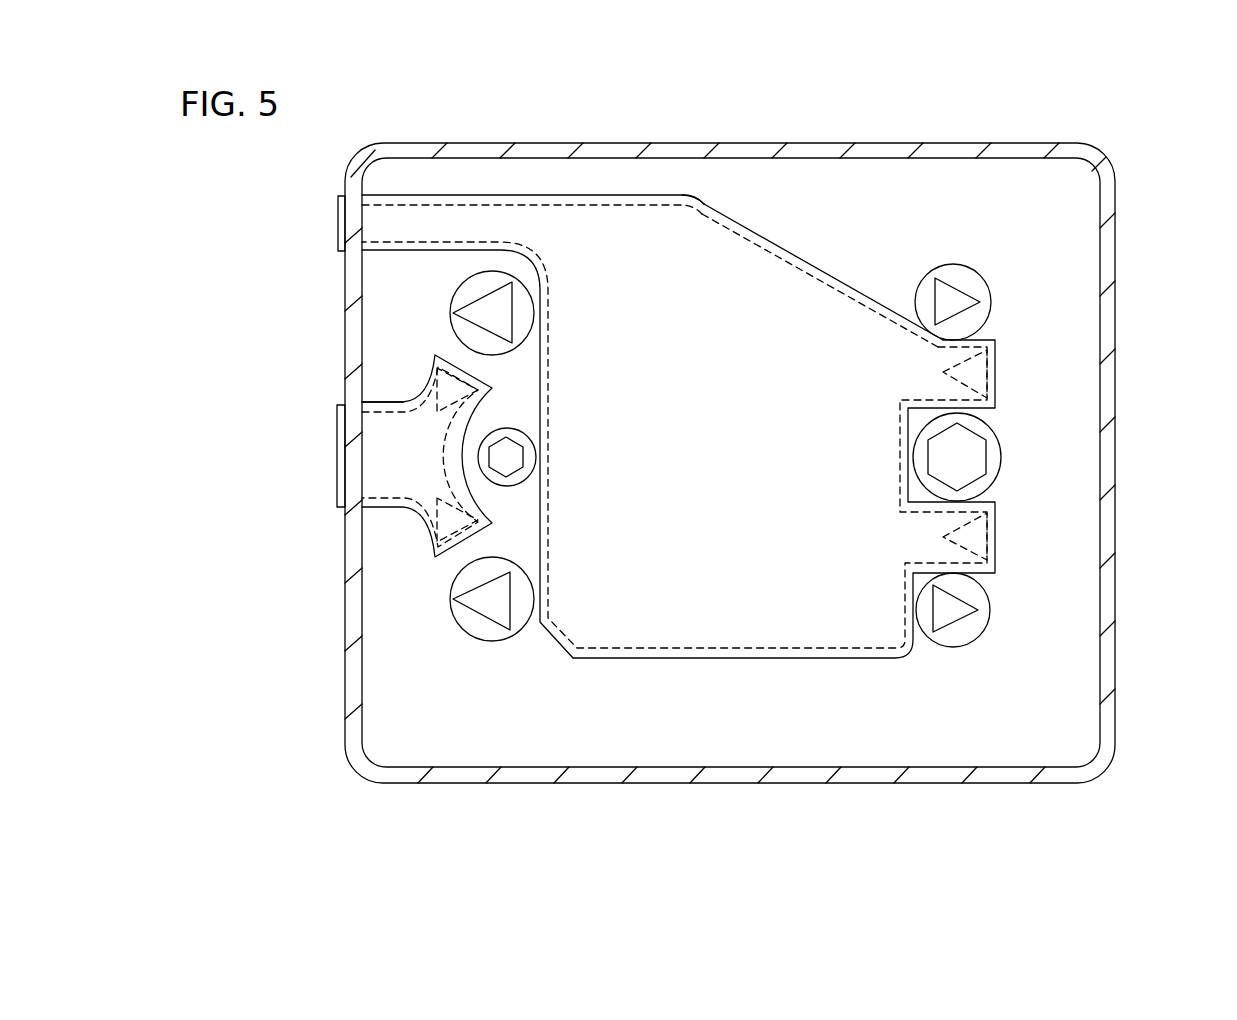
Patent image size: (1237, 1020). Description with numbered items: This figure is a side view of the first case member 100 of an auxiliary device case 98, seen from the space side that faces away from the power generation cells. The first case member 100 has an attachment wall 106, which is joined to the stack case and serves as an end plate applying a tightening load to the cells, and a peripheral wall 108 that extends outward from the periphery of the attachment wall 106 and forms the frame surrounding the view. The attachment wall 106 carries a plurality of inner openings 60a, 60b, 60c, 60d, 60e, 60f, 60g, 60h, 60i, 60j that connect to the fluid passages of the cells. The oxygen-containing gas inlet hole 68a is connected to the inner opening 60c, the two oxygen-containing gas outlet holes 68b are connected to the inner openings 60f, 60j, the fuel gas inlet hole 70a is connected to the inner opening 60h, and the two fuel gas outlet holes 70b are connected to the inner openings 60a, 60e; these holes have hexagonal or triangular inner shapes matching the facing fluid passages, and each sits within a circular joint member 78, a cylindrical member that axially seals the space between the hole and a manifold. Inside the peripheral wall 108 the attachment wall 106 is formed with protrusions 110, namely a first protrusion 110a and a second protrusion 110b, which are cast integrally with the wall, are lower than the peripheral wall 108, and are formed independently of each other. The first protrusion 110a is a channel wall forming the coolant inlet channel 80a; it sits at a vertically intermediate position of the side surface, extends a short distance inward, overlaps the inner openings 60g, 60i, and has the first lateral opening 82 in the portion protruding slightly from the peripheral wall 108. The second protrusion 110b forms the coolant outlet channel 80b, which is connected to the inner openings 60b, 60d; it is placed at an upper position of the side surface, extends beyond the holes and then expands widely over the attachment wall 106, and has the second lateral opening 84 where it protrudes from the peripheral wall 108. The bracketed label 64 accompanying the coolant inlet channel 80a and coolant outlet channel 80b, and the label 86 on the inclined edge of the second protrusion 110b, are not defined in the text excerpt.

The first case member 100 is at (1106, 145).
The controller 98 is at (789, 446).
The attachment wall 106 is at (878, 185).
The peripheral wall 108 is at (357, 300).
The second lateral opening 84 is at (338, 226).
The first lateral opening 82 is at (338, 456).
The protrusions 110 is at (678, 456).
The first protrusion 110a is at (415, 512).
The second protrusion 110b is at (725, 660).
The rib 64 is at (595, 289).
The coolant inlet channel 80a is at (378, 407).
The coolant outlet channel 80b is at (707, 210).
The inclined edge 86 is at (733, 268).
The joint member 78 is at (490, 285).
The oxygen-containing gas outlet holes 68b is at (547, 454).
The oxygen-containing gas inlet hole 68a is at (1006, 455).
The fuel gas inlet hole 70a is at (565, 449).
The fuel gas outlet holes 70b is at (1008, 446).
The inner opening 60a is at (958, 312).
The inner opening 60b is at (997, 366).
The inner opening 60c is at (960, 455).
The inner opening 60d is at (997, 537).
The inner opening 60e is at (955, 605).
The inner opening 60f is at (500, 312).
The inner opening 60g is at (493, 386).
The inner opening 60h is at (510, 458).
The inner opening 60i is at (500, 528).
The inner opening 60j is at (492, 600).